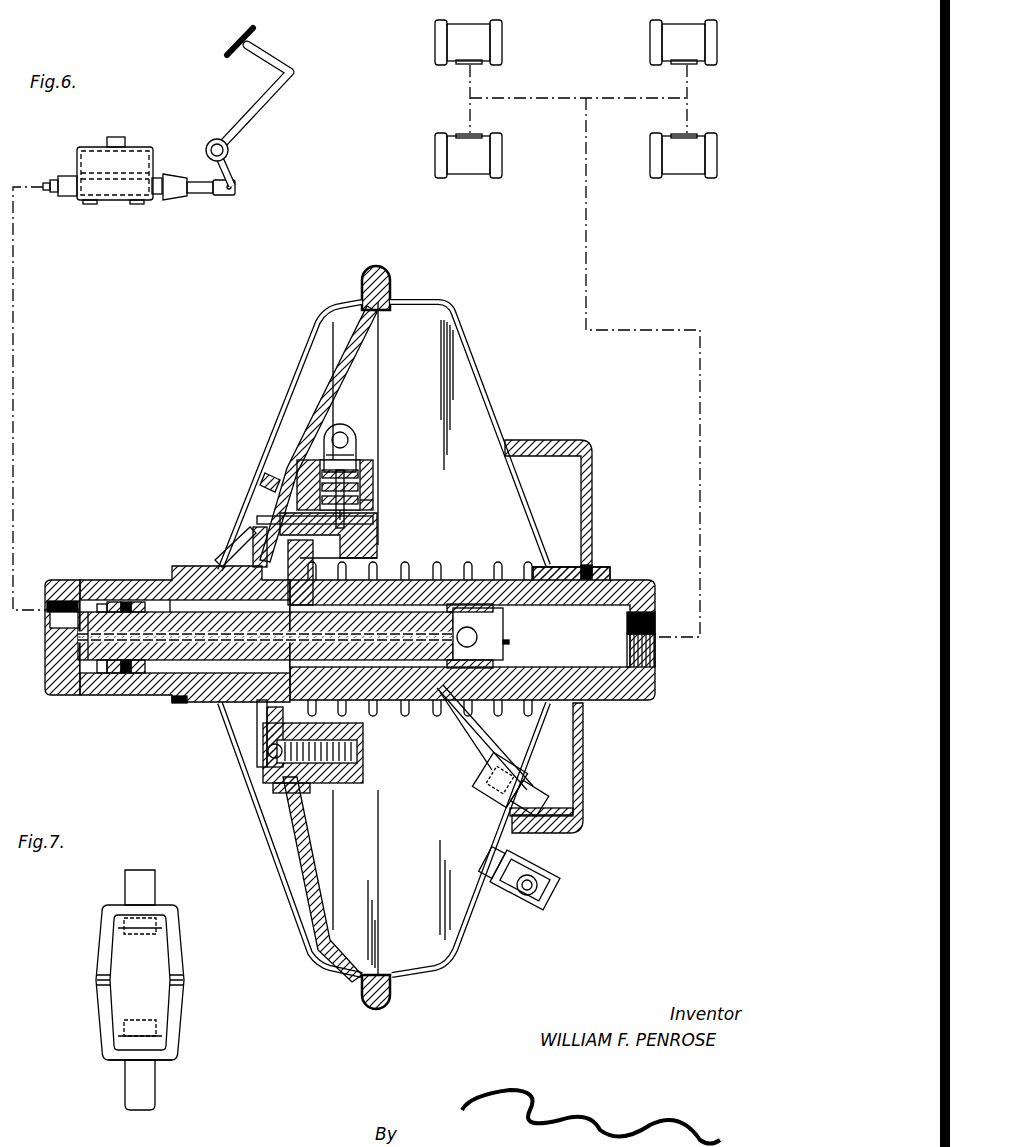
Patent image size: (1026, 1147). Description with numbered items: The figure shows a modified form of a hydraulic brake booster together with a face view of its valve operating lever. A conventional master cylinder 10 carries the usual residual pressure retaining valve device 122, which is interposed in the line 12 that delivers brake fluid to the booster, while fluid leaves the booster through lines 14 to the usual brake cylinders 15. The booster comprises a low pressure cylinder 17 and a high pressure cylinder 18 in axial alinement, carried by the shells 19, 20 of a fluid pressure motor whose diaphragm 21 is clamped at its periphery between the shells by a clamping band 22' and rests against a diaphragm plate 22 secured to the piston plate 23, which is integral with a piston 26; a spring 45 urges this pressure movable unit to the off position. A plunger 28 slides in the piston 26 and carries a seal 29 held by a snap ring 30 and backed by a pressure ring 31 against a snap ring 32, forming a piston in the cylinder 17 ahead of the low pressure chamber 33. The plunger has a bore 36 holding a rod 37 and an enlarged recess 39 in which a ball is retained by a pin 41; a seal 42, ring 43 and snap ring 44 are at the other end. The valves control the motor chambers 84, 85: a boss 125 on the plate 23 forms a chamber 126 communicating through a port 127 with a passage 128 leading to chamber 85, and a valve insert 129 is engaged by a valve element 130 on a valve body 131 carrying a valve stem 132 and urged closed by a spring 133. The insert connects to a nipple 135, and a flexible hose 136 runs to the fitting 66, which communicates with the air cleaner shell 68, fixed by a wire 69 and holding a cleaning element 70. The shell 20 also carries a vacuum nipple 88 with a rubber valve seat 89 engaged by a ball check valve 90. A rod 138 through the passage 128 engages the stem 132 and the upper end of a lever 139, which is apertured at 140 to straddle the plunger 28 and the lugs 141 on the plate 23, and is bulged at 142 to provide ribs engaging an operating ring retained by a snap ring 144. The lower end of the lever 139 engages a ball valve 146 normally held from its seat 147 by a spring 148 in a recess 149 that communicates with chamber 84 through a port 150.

In FIG. 6, the master cylinder 10 is at (136, 148).
In FIG. 6, the residual pressure retaining valve device 122 is at (68, 197).
In FIG. 6, the line 12 is at (13, 270).
In FIG. 6, the brake cylinders 15 is at (445, 63).
In FIG. 6, the lines 14 is at (654, 330).
In FIG. 6, the clamping band 22' is at (394, 274).
In FIG. 6, the shell 19 is at (305, 325).
In FIG. 6, the shell 20 is at (455, 325).
In FIG. 6, the diaphragm plate 22 is at (318, 434).
In FIG. 6, the motor chamber 85 is at (298, 366).
In FIG. 6, the diaphragm 21 is at (335, 338).
In FIG. 6, the motor chamber 84 is at (450, 372).
In FIG. 6, the cleaning element 70 is at (585, 447).
In FIG. 6, the wire 69 is at (596, 565).
In FIG. 6, the shell 68 is at (578, 815).
In FIG. 6, the snap ring 44 is at (445, 700).
In FIG. 6, the flexible hose 136 is at (482, 762).
In FIG. 6, the nipple 66 is at (545, 775).
In FIG. 6, the nipple 88 is at (548, 873).
In FIG. 6, the valve seat 89 is at (527, 875).
In FIG. 6, the ball check valve 90 is at (520, 900).
In FIG. 6, the cylinder 17 is at (52, 580).
In FIG. 6, the plunger 28 is at (165, 675).
In FIG. 6, the cylinder 18 is at (626, 583).
In FIG. 6, the snap ring 32 is at (158, 632).
In FIG. 6, the low pressure chamber 33 is at (88, 675).
In FIG. 6, the seal 29 is at (114, 602).
In FIG. 6, the snap ring 30 is at (102, 603).
In FIG. 6, the pressure ring 31 is at (137, 602).
In FIG. 6, the rod 37 is at (172, 600).
In FIG. 6, the bore 36 is at (183, 703).
In FIG. 6, the recess 39 is at (503, 620).
In FIG. 6, the pin 41 is at (477, 637).
In FIG. 6, the seal 42 is at (500, 662).
In FIG. 6, the ring 43 is at (505, 604).
In FIG. 6, the spring 45 is at (510, 576).
In FIG. 6, the piston 26 is at (360, 700).
In FIG. 6, the port 127 is at (373, 512).
In FIG. 6, the piston plate 23 is at (330, 425).
In FIG. 6, the nipple 135 is at (352, 425).
In FIG. 6, the valve insert 129 is at (358, 472).
In FIG. 6, the valve element 130 is at (350, 478).
In FIG. 6, the valve body 131 is at (356, 486).
In FIG. 6, the chamber 126 is at (358, 497).
In FIG. 6, the spring 133 is at (373, 500).
In FIG. 6, the boss 125 is at (377, 525).
In FIG. 6, the valve stem 132 is at (377, 545).
In FIG. 6, the rod 138 is at (258, 520).
In FIG. 6, the passage 128 is at (268, 492).
In FIG. 6, the lever 139 is at (253, 540).
In FIG. 7, the lever 139 is at (100, 1010).
In FIG. 6, the snap ring 144 is at (250, 567).
In FIG. 6, the aperture 140 is at (288, 575).
In FIG. 7, the aperture 140 is at (112, 943).
In FIG. 6, the lugs 141 is at (255, 700).
In FIG. 7, the lugs 141 is at (158, 915).
In FIG. 6, the recess 149 is at (363, 733).
In FIG. 6, the port 150 is at (357, 752).
In FIG. 6, the ball valve 146 is at (268, 751).
In FIG. 6, the seat 147 is at (310, 785).
In FIG. 6, the spring 148 is at (345, 785).
In FIG. 7, the bulge 142 is at (96, 972).